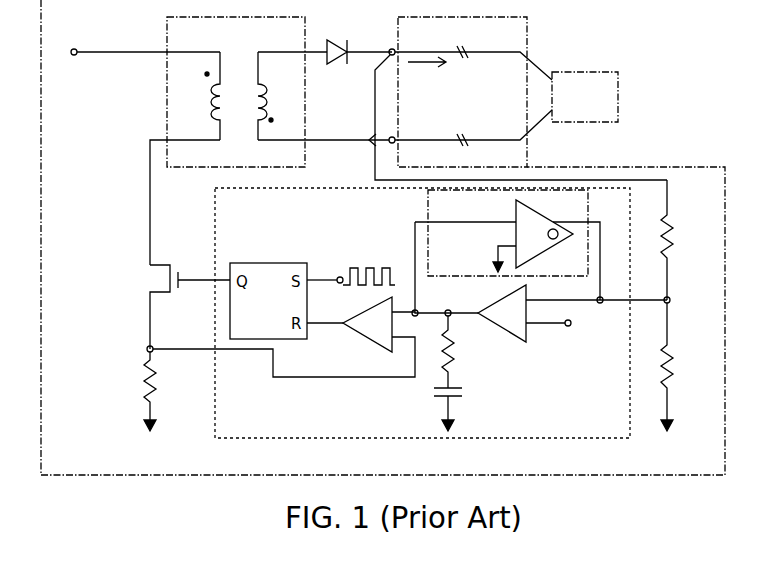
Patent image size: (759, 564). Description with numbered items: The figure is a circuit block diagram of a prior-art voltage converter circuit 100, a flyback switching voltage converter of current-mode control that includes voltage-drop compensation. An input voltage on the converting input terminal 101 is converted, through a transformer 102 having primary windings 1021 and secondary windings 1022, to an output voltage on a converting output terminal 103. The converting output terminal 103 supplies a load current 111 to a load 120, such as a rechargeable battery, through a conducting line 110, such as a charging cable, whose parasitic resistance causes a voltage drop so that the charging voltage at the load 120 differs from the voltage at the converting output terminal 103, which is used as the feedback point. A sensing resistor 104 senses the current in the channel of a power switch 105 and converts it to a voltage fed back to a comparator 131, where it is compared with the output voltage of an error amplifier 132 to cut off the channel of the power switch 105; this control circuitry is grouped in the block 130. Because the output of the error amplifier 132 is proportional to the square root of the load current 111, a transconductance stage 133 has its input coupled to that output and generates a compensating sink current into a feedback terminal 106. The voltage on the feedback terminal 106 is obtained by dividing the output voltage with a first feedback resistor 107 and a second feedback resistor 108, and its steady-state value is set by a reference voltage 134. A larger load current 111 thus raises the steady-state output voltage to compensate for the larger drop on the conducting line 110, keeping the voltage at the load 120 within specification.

The voltage converter circuit 100 is at (383, 237).
The converting input terminal 101 is at (74, 48).
The transformer 102 is at (236, 92).
The primary windings 1021 is at (211, 107).
The secondary windings 1022 is at (271, 100).
The converting output terminal 103 is at (391, 48).
The sensing resistor 104 is at (144, 384).
The power switch 105 is at (150, 268).
The feedback terminal 106 is at (654, 304).
The first feedback resistor 107 is at (673, 238).
The second feedback resistor 108 is at (673, 363).
The conducting line 110 is at (478, 108).
The load current 111 is at (430, 68).
The load 120 is at (598, 117).
The control circuit 130 is at (262, 419).
The comparator 131 is at (370, 343).
The error amplifier 132 is at (540, 313).
The transconductance stage 133 is at (507, 245).
The reference voltage 134 is at (568, 327).